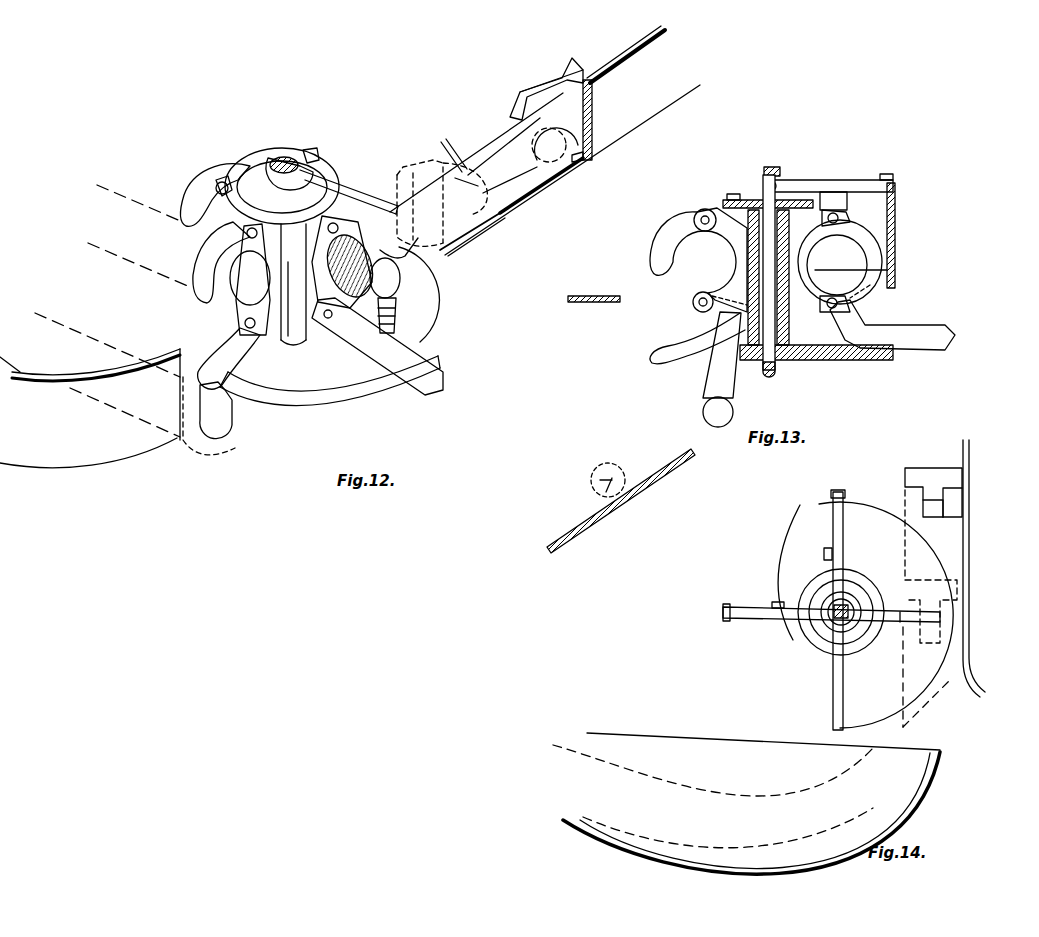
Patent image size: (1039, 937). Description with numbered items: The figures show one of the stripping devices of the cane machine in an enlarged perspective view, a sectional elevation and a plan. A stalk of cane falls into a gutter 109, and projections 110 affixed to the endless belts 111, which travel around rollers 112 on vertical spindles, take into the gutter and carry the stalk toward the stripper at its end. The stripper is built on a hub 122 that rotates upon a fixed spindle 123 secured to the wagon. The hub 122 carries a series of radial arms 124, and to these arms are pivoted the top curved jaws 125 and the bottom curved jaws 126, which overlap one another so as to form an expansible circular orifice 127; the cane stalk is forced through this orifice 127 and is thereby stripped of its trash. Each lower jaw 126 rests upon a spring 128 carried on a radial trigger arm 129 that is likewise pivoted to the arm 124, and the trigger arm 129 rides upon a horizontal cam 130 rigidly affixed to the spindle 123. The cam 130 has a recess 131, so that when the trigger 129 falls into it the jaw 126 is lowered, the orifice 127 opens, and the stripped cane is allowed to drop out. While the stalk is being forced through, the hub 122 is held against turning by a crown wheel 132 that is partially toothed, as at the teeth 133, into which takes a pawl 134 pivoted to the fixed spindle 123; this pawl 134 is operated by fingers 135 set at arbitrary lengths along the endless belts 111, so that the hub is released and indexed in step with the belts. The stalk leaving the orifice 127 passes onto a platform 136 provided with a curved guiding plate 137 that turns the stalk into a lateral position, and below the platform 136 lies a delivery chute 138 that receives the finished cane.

In FIG. 12, the gutter 109 is at (530, 192).
In FIG. 12, the projection 110 is at (575, 106).
In FIG. 13, the projection 110 is at (887, 270).
In FIG. 14, the projection 110 is at (923, 468).
In FIG. 12, the endless belt 111 is at (572, 140).
In FIG. 13, the endless belt 111 is at (895, 236).
In FIG. 14, the endless belt 111 is at (970, 500).
In FIG. 14, the roller 112 is at (970, 628).
In FIG. 12, the hub 122 is at (296, 342).
In FIG. 13, the hub 122 is at (748, 260).
In FIG. 12, the fixed spindle 123 is at (286, 155).
In FIG. 13, the fixed spindle 123 is at (779, 170).
In FIG. 14, the fixed spindle 123 is at (832, 608).
In FIG. 12, the radial arm 124 is at (306, 275).
In FIG. 13, the radial arm 124 is at (742, 212).
In FIG. 14, the radial arm 124 is at (800, 625).
In FIG. 12, the top curved jaw 125 is at (186, 195).
In FIG. 13, the top curved jaw 125 is at (865, 240).
In FIG. 12, the bottom curved jaw 126 is at (212, 338).
In FIG. 12, the expansible circular orifice 127 is at (249, 278).
In FIG. 13, the expansible circular orifice 127 is at (820, 252).
In FIG. 12, the spring 128 is at (396, 330).
In FIG. 13, the spring 128 is at (878, 316).
In FIG. 12, the radial trigger arm 129 is at (240, 432).
In FIG. 13, the radial trigger arm 129 is at (730, 386).
In FIG. 12, the horizontal cam 130 is at (330, 381).
In FIG. 13, the horizontal cam 130 is at (835, 362).
In FIG. 14, the horizontal cam 130 is at (890, 705).
In FIG. 14, the recess 131 is at (820, 610).
In FIG. 12, the crown wheel 132 is at (264, 150).
In FIG. 13, the crown wheel 132 is at (735, 198).
In FIG. 14, the crown wheel 132 is at (820, 580).
In FIG. 12, the teeth 133 is at (240, 160).
In FIG. 14, the teeth 133 is at (860, 578).
In FIG. 12, the pawl 134 is at (385, 175).
In FIG. 13, the pawl 134 is at (840, 180).
In FIG. 14, the pawl 134 is at (893, 630).
In FIG. 12, the finger 135 is at (534, 90).
In FIG. 14, the finger 135 is at (947, 520).
In FIG. 12, the platform 136 is at (20, 368).
In FIG. 13, the platform 136 is at (619, 296).
In FIG. 14, the platform 136 is at (746, 790).
In FIG. 12, the curved guiding plate 137 is at (88, 445).
In FIG. 14, the curved guiding plate 137 is at (912, 785).
In FIG. 13, the delivery chute 138 is at (672, 452).